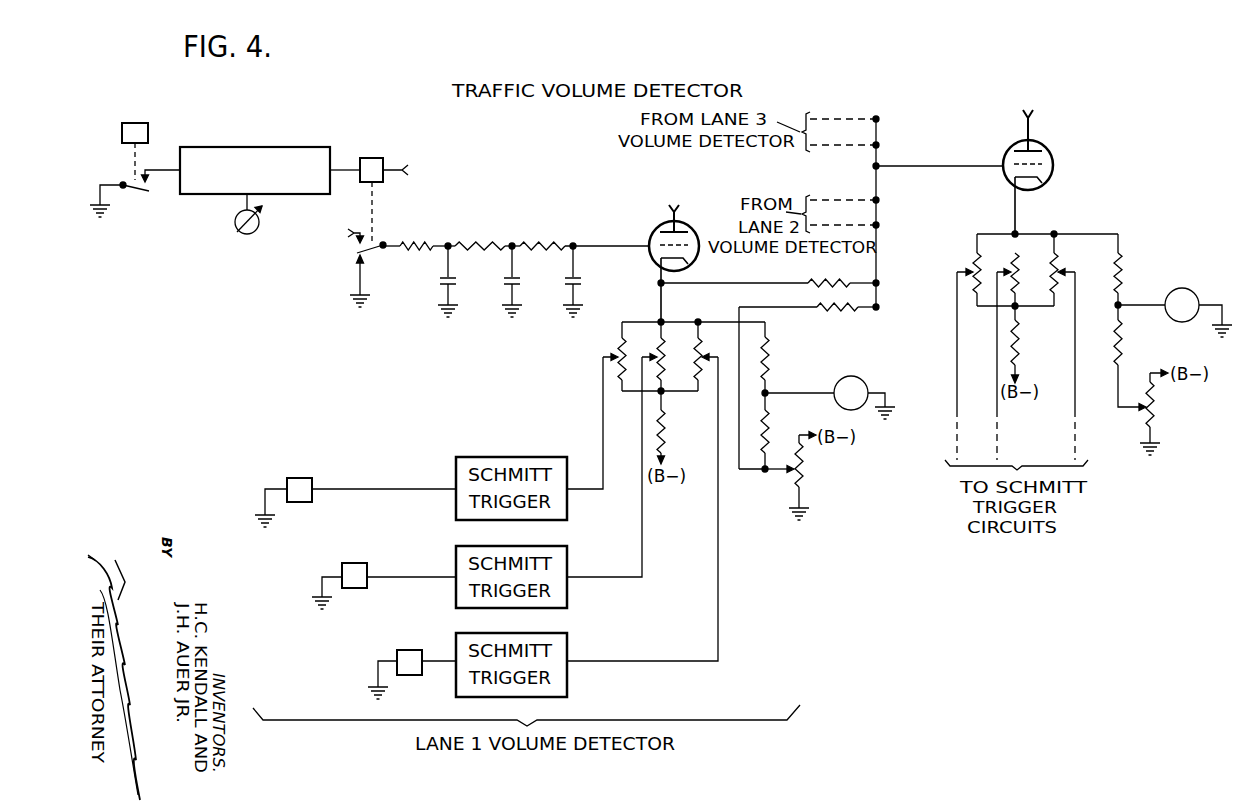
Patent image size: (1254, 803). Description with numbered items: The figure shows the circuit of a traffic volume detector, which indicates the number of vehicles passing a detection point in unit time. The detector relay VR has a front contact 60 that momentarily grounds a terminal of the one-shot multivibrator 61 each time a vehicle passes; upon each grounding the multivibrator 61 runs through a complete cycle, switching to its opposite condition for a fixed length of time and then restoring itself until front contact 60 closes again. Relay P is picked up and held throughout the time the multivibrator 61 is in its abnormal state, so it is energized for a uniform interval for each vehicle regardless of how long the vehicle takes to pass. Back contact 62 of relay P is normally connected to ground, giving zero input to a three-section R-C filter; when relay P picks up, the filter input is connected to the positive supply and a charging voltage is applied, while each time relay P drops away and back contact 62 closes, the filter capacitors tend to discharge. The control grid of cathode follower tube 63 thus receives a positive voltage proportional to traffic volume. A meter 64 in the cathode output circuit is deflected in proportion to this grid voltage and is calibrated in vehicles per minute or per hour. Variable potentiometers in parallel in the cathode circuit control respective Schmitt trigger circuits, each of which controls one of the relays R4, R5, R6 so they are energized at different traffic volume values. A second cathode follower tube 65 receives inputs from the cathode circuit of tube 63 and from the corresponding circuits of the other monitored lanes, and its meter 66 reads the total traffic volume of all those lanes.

The front contact 60 is at (137, 193).
The one-shot multivibrator 61 is at (250, 148).
The back contact 62 is at (377, 242).
The cathode follower tube 63 is at (702, 222).
The meter 64 is at (856, 381).
The cathode follower tube 65 is at (1053, 158).
The meter 66 is at (1188, 290).
The detector relay VR is at (137, 140).
The relay P is at (372, 158).
The relay R4 is at (298, 472).
The relay R5 is at (355, 558).
The relay R6 is at (410, 644).